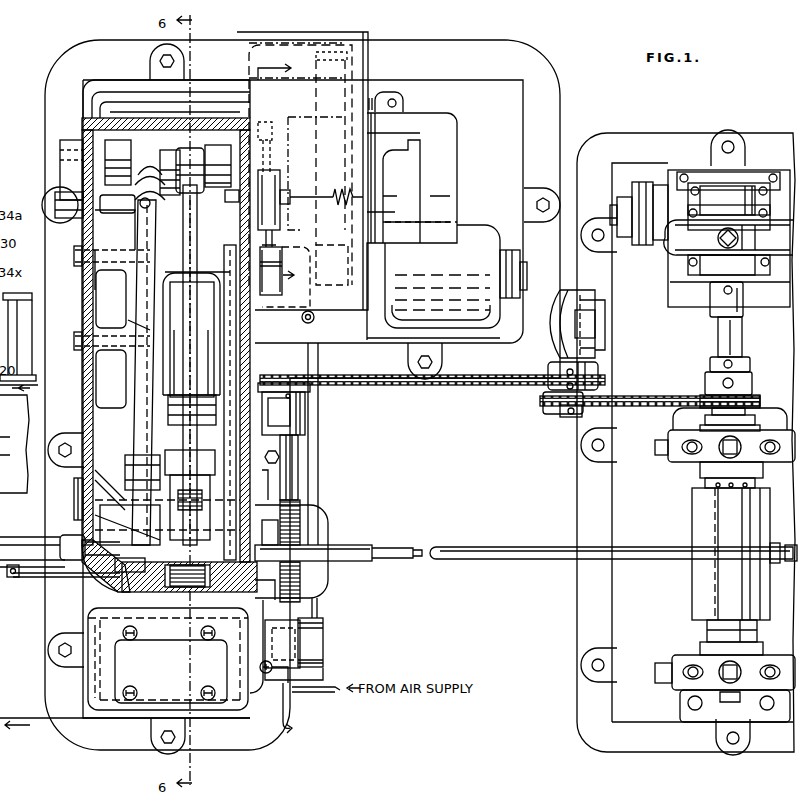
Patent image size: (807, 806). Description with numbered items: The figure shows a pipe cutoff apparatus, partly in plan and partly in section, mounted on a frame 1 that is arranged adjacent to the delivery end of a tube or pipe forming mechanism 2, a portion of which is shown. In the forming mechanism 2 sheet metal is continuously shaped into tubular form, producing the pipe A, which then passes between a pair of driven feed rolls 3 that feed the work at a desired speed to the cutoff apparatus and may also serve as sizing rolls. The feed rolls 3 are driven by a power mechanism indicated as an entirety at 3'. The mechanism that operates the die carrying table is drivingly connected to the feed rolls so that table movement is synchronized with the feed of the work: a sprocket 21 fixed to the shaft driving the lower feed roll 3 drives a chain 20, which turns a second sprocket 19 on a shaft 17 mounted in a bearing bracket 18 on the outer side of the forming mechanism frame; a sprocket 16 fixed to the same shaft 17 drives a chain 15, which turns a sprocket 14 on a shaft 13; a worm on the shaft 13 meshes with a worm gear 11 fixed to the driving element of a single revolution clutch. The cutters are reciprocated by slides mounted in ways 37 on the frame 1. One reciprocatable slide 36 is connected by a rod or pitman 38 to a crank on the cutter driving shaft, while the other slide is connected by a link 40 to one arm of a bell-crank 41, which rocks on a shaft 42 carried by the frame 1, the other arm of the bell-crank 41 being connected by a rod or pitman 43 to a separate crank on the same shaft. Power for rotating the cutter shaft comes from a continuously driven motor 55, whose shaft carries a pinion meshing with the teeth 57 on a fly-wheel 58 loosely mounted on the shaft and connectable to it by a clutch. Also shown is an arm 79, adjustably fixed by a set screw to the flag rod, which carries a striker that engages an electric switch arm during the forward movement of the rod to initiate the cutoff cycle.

The frame 1 is at (302, 397).
The tube or pipe forming mechanism 2 is at (686, 442).
The driven feed rolls 3 is at (712, 554).
The power mechanism 3' is at (701, 263).
The worm gear 11 is at (300, 512).
The shaft 13 is at (295, 470).
The sprocket 14 is at (272, 383).
The chain 15 is at (372, 380).
The sprocket 16 is at (600, 380).
The shaft 17 is at (570, 418).
The bracket 18 is at (555, 335).
The second sprocket 19 is at (548, 420).
The chain 20 is at (660, 398).
The sprocket 21 is at (760, 398).
The reciprocatable slide 36 is at (175, 275).
The ways 37 is at (226, 258).
The rod or pitman 38 is at (208, 222).
The link 40 is at (200, 570).
The bell-crank 41 is at (167, 497).
The shaft 42 is at (73, 498).
The rod or pitman 43 is at (133, 225).
The motor 55 is at (447, 226).
The teeth 57 is at (378, 40).
The fly-wheel 58 is at (376, 100).
The arm 79 is at (13, 578).
The pipe A is at (508, 563).